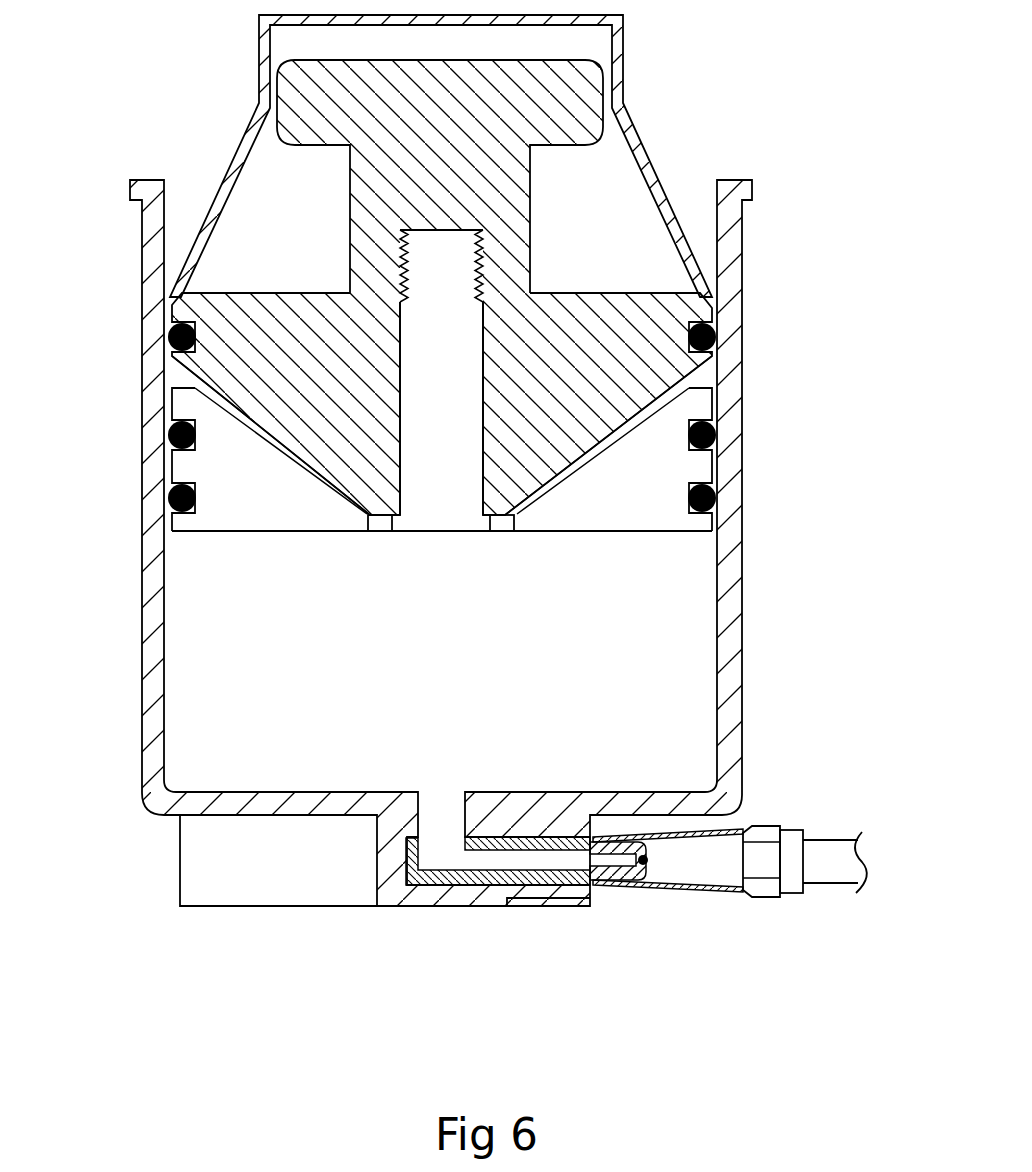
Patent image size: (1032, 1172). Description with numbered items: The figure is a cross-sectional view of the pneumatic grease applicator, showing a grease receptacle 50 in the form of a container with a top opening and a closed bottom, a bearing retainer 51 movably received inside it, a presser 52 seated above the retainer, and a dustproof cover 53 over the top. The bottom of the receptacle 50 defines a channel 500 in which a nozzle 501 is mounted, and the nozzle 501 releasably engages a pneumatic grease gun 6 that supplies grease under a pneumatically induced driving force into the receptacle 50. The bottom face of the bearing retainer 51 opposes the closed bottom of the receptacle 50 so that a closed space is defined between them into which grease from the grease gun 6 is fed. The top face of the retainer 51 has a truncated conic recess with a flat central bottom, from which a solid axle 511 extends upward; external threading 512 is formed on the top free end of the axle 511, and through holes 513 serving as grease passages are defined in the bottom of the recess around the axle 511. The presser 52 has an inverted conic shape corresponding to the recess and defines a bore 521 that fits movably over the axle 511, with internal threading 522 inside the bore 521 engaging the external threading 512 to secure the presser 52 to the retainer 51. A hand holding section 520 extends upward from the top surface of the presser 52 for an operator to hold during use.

The grease receptacle 50 is at (146, 797).
The channel 500 is at (486, 879).
The nozzle 501 is at (603, 862).
The bearing retainer 51 is at (637, 517).
The axle 511 is at (473, 402).
The external threading 512 is at (475, 257).
The through holes 513 is at (382, 522).
The presser 52 is at (263, 367).
The hand holding section 520 is at (318, 120).
The bore 521 is at (487, 468).
The internal threading 522 is at (487, 283).
The dustproof cover 53 is at (640, 133).
The pneumatic grease gun 6 is at (738, 862).